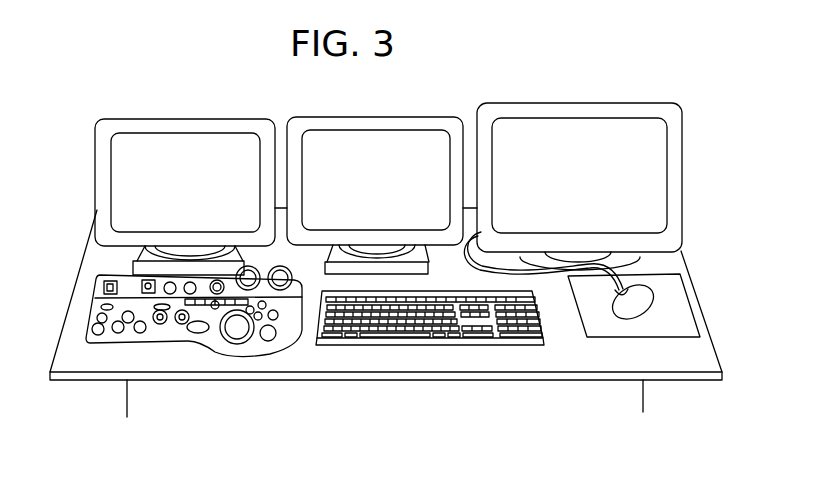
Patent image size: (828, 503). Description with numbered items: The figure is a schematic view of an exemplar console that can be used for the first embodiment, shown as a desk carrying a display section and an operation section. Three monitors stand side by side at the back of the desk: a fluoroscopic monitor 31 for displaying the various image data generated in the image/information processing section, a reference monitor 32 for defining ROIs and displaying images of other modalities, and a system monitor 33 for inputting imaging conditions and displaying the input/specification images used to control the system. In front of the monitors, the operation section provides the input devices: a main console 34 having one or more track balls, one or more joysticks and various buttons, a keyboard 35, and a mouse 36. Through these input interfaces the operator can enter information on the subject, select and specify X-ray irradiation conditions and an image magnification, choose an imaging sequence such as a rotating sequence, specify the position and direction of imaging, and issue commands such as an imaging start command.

The fluoroscopic monitor 31 is at (192, 142).
The reference monitor 32 is at (363, 142).
The system monitor 33 is at (573, 133).
The main console 34 is at (187, 330).
The keyboard 35 is at (422, 330).
The mouse 36 is at (622, 328).